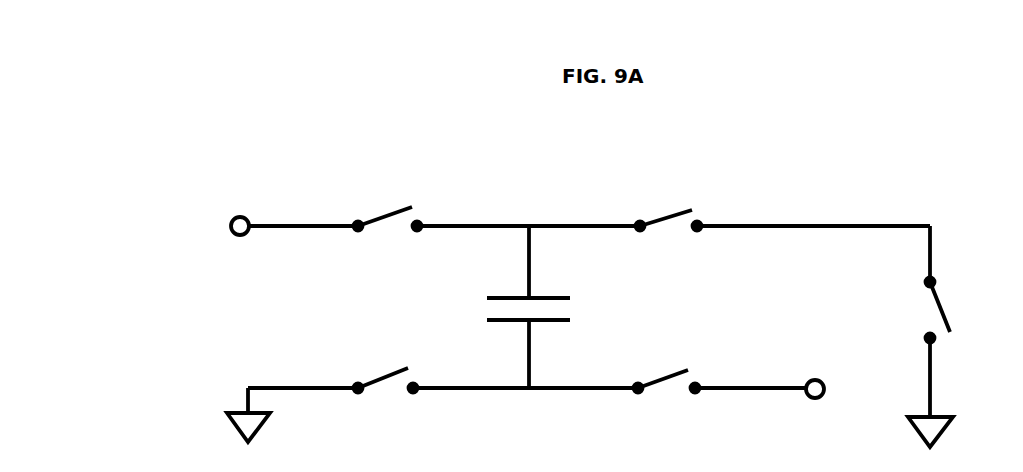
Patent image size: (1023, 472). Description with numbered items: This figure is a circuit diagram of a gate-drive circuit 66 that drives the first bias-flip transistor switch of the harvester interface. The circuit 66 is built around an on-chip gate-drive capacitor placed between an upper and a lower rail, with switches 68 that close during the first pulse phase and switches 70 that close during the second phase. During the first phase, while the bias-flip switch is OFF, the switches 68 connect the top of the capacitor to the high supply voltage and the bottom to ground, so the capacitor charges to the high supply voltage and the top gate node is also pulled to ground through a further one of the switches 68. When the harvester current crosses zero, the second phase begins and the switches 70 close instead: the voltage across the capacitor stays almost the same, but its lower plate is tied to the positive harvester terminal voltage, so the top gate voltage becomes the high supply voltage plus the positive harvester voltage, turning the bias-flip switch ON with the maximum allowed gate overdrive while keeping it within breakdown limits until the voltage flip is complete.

The circuit 66 is at (79, 78).
The switches 68 is at (380, 200).
The switches 70 is at (665, 213).